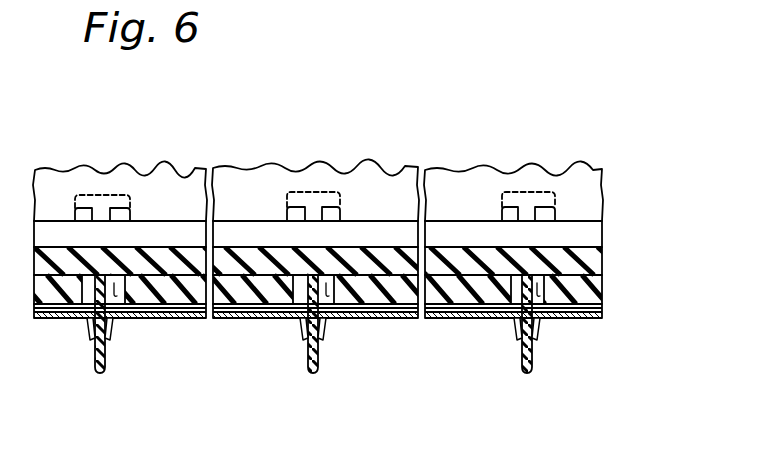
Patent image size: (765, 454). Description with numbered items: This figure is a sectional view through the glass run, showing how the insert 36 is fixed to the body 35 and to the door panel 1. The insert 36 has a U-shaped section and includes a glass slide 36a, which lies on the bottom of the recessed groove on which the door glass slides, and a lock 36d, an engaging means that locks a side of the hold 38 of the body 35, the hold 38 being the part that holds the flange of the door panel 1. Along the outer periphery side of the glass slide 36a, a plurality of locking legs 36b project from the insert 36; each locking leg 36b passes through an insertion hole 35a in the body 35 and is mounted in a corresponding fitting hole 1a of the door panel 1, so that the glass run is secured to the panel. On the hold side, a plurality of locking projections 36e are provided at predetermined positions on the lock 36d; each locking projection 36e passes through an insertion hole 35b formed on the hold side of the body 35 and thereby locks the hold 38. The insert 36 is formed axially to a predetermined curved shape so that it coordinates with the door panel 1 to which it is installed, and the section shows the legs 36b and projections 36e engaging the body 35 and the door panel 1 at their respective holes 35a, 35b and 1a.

The door panel 1 is at (583, 318).
The fitting hole 1a is at (84, 328).
The body 35 is at (590, 285).
The insertion hole 35a is at (137, 318).
The insertion hole 35b is at (75, 215).
The insert 36 is at (589, 259).
The glass slide 36a is at (102, 202).
The locking leg 36b is at (114, 348).
The lock 36d is at (575, 230).
The locking projection 36e is at (318, 200).
The hold 38 is at (578, 180).